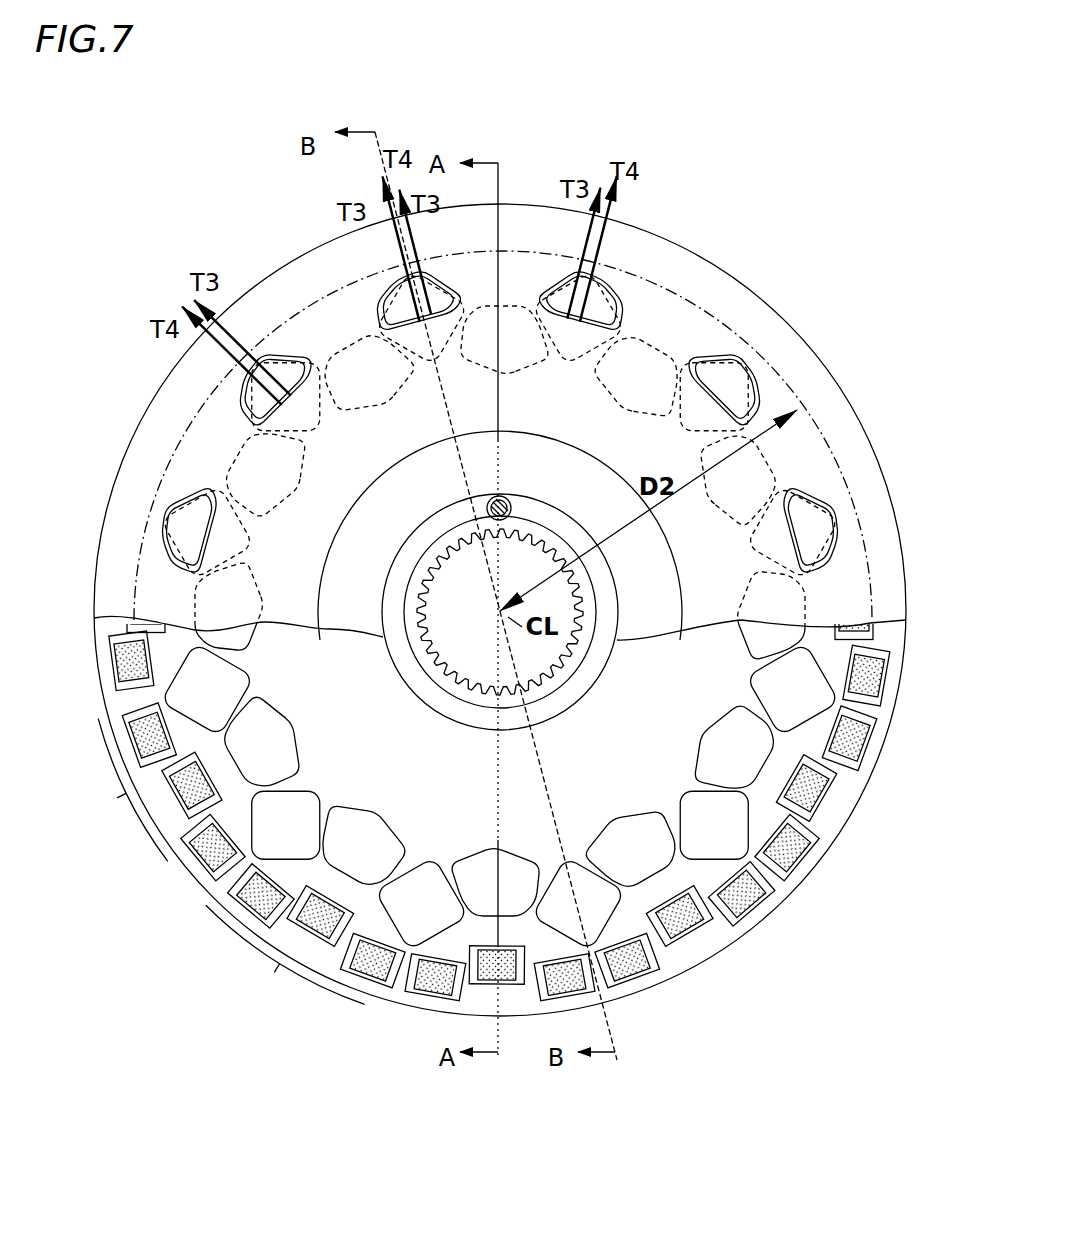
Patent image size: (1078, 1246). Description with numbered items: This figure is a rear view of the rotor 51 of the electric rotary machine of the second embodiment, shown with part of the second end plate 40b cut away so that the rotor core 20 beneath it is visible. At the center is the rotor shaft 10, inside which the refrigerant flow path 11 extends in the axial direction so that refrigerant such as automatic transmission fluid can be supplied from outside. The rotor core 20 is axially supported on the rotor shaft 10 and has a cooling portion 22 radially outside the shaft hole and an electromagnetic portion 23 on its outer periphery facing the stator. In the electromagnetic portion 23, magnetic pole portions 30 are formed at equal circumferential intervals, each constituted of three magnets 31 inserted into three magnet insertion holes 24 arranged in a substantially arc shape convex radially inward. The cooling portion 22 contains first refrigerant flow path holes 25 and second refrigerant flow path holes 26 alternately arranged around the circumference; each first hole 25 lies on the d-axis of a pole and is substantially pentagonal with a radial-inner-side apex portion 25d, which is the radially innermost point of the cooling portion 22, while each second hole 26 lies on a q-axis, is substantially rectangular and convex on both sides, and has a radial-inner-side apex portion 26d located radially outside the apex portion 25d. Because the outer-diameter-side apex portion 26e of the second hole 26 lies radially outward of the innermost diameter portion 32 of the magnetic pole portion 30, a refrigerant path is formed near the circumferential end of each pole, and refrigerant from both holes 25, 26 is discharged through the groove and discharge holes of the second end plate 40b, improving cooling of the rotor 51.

The rotor shaft 10 is at (620, 618).
The refrigerant flow path 11 is at (535, 657).
The rotor core 20 is at (766, 297).
The cooling portion 22 is at (700, 707).
The electromagnetic portion 23 is at (850, 810).
The magnet insertion hole 24 is at (126, 712).
The first refrigerant flow path hole 25 is at (505, 330).
The radial-inner-side apex portion 25d is at (378, 826).
The second refrigerant flow path hole 26 is at (432, 275).
The radial-inner-side apex portion 26d is at (430, 890).
The outer-diameter-side apex portion 26e is at (424, 935).
The magnetic pole portion 30 is at (221, 865).
The magnet 31 is at (118, 655).
The innermost diameter portion 32 is at (337, 890).
The second end plate 40b is at (158, 388).
The rotor 51 is at (788, 200).